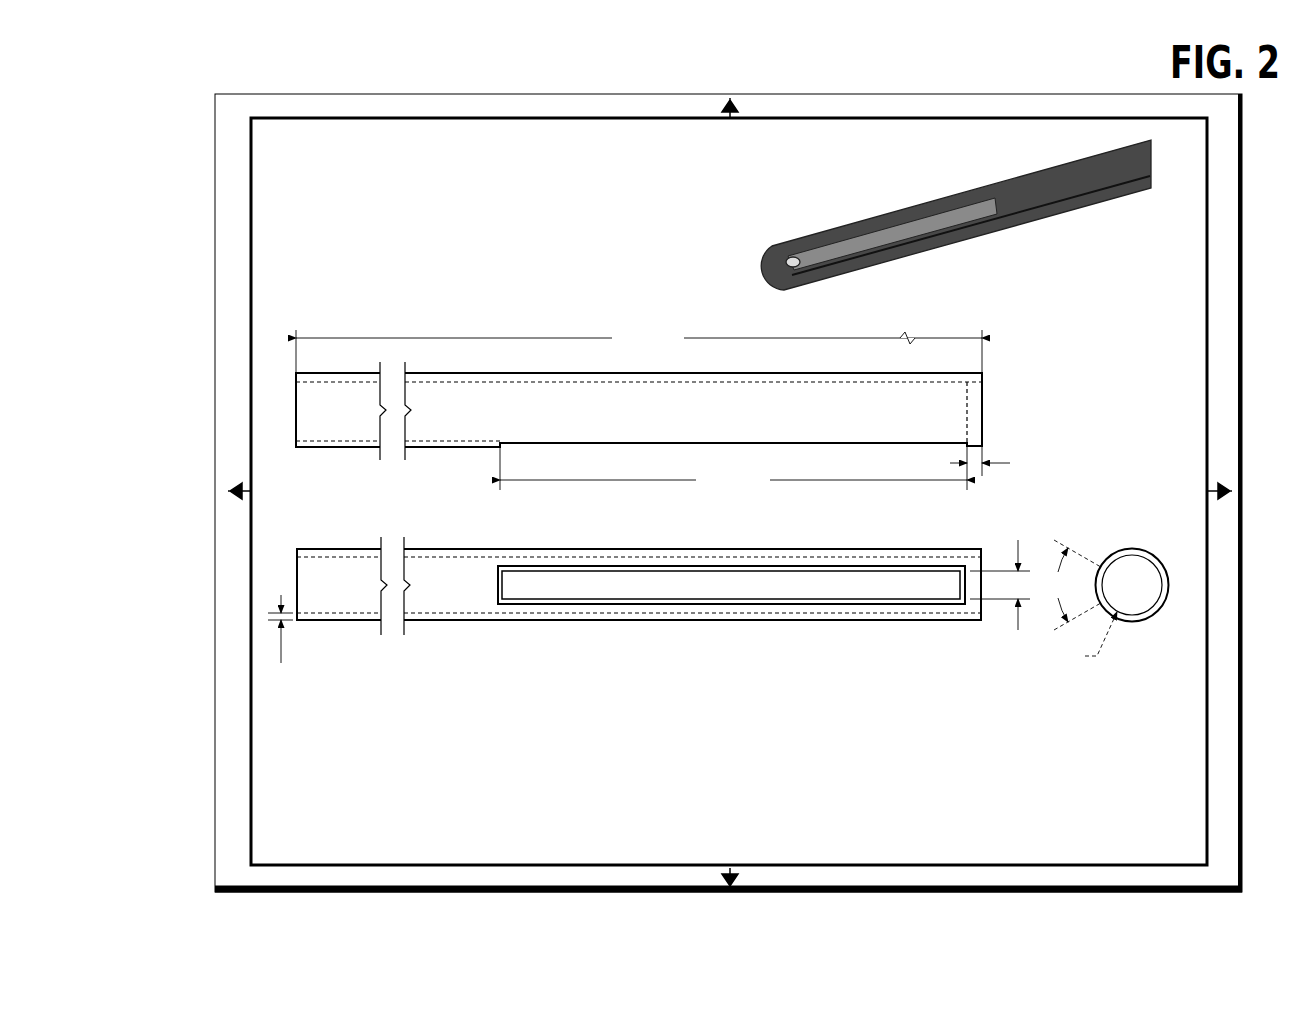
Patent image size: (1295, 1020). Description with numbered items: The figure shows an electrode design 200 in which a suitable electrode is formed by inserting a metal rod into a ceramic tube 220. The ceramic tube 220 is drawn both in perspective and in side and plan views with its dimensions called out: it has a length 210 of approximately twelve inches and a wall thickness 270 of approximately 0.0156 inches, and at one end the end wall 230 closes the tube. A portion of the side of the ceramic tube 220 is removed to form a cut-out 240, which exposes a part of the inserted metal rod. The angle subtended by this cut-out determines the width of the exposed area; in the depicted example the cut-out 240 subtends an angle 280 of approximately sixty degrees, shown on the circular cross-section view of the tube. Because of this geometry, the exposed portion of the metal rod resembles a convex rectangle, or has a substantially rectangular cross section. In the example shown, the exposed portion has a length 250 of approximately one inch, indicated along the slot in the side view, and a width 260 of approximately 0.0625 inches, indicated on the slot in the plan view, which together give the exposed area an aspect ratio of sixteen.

The electrode design 200 is at (205, 60).
The length 210 is at (398, 322).
The ceramic tube 220 is at (992, 168).
The distal end wall 230 is at (993, 437).
The cut-out 240 is at (777, 256).
The length 250 is at (593, 497).
The width 260 is at (1013, 610).
The thickness 270 is at (262, 597).
The angle 280 is at (1087, 556).